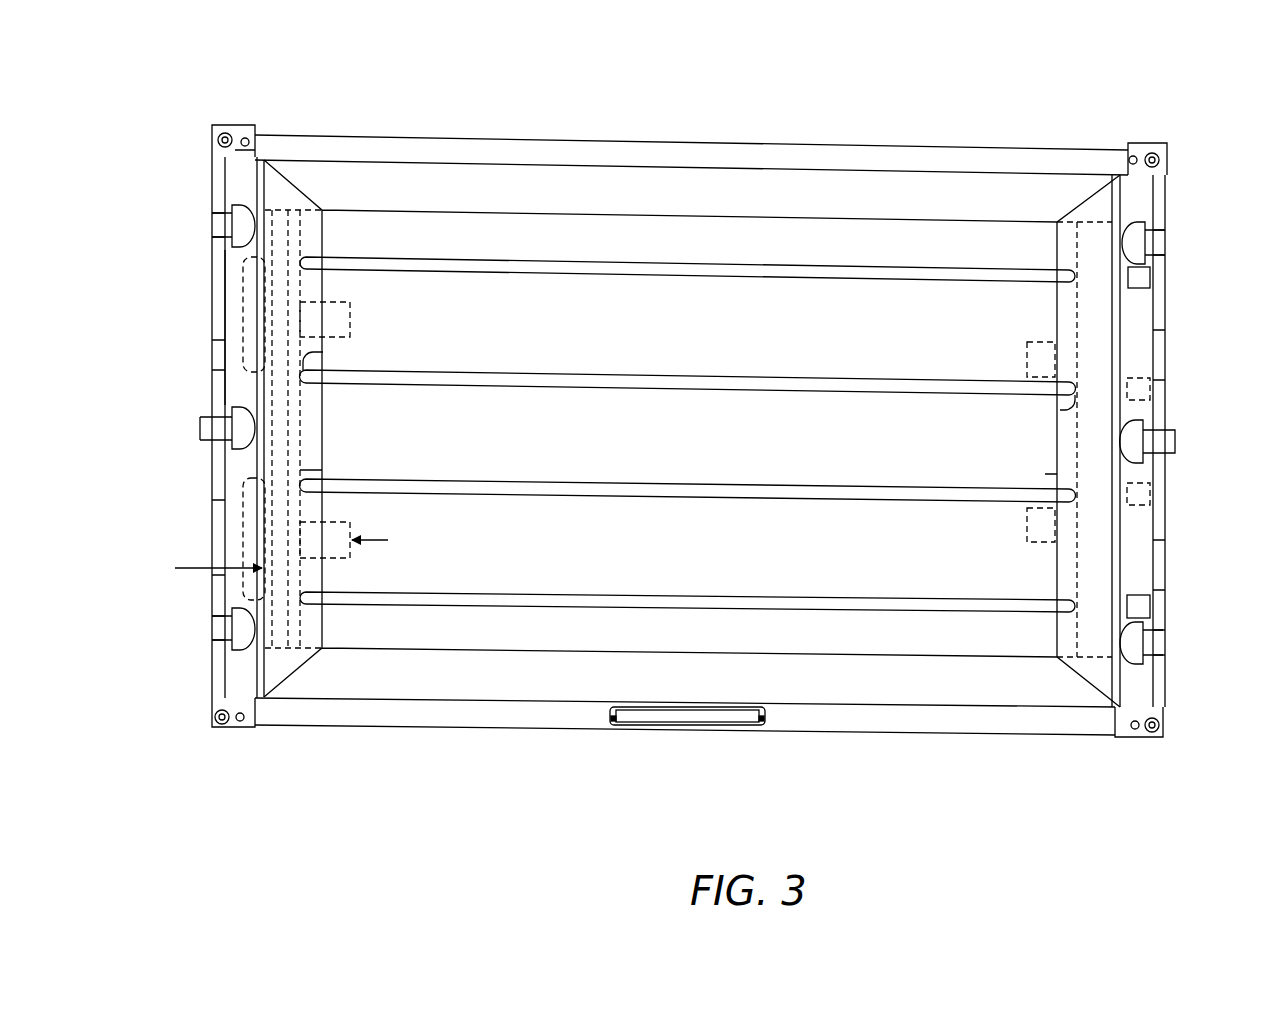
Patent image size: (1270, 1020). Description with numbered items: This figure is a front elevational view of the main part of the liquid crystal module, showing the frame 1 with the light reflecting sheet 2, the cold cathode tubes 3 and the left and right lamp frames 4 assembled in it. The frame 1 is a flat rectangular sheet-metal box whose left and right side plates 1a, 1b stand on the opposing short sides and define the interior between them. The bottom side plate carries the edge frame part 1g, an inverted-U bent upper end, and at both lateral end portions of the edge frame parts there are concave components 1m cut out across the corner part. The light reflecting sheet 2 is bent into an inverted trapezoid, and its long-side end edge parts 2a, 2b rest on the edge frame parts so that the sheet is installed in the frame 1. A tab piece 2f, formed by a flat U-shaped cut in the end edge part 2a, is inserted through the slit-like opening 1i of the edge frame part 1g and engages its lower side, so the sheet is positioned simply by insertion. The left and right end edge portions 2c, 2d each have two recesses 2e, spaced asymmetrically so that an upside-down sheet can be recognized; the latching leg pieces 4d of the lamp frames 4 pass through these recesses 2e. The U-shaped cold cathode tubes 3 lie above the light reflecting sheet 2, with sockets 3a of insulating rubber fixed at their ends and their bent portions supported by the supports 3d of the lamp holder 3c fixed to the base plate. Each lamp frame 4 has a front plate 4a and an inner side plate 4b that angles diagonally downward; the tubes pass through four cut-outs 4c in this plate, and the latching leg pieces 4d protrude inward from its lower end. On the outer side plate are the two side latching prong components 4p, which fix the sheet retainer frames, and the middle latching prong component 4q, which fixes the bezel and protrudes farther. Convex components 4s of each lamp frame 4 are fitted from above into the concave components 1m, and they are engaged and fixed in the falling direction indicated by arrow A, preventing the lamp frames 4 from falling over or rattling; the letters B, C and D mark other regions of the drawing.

The frame 1 is at (1190, 184).
The left side plate 1a is at (212, 505).
The right side plate 1b is at (1165, 470).
The edge frame part 1g is at (740, 727).
The slit-like opening 1i is at (668, 727).
The concave component 1m is at (248, 138).
The light reflecting sheet 2 is at (645, 318).
The end edge part 2a is at (968, 720).
The end edge part 2b is at (910, 150).
The left end edge portion 2c is at (300, 348).
The right end edge portion 2d is at (1085, 320).
The recess 2e is at (300, 310).
The tab piece 2f is at (700, 705).
The cold cathode tube 3 is at (775, 262).
The socket 3a is at (1150, 275).
The lamp holder 3c is at (320, 428).
The support 3d is at (300, 392).
The lamp frame 4 is at (1175, 418).
The front plate 4a is at (232, 320).
The inner side plate 4b is at (322, 466).
The cut-out 4c is at (323, 357).
The latching leg piece 4d is at (350, 310).
The side latching prong component 4p is at (225, 218).
The middle latching prong component 4q is at (205, 428).
The convex component 4s is at (225, 133).
The falling direction arrow A is at (380, 540).
The region B is at (244, 530).
The region C is at (269, 570).
The view direction D is at (207, 568).